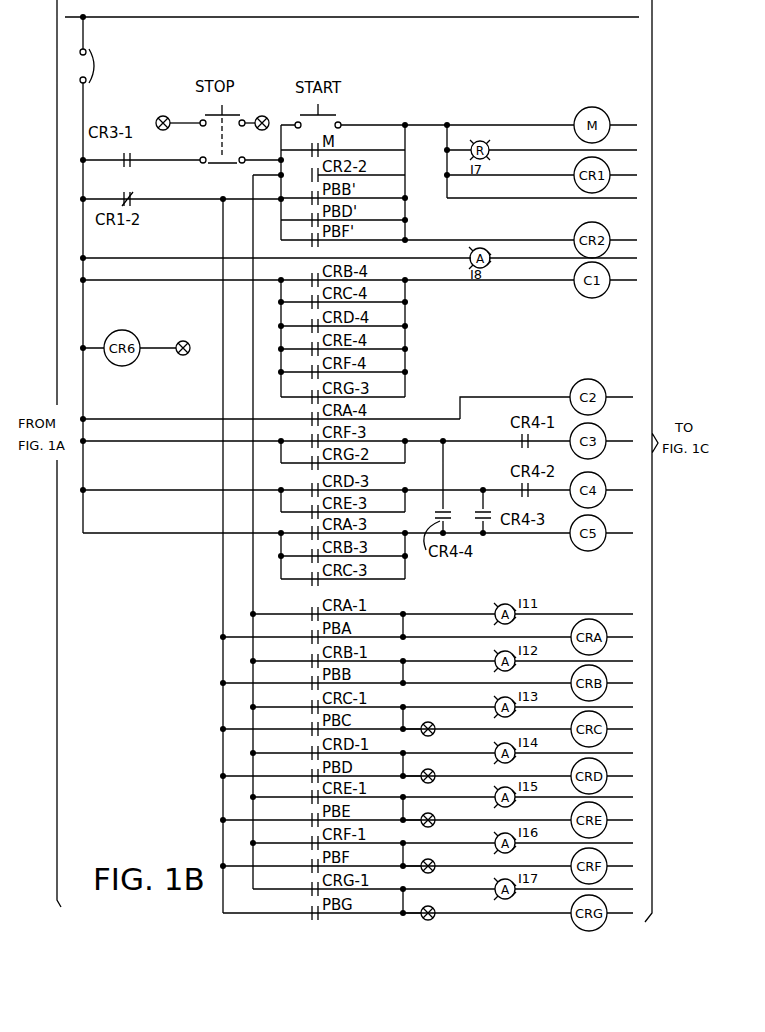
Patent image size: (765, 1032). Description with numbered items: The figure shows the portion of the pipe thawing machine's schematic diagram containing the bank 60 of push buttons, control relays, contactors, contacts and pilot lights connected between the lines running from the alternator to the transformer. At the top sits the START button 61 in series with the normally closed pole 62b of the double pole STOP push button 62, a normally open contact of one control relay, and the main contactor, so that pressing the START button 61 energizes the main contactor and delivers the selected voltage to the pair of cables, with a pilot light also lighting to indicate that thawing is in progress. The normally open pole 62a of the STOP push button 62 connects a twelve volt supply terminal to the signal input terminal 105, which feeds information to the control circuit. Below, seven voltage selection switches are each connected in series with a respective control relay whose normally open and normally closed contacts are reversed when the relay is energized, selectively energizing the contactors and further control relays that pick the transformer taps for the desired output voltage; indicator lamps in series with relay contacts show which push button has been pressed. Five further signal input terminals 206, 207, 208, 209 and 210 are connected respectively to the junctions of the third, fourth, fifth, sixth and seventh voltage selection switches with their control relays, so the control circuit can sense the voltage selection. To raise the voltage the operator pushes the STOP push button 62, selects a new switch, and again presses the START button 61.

The bank of push buttons, control relays, contactors, contacts and pilot lights 60 is at (250, 475).
The START button 61 is at (340, 113).
The STOP push button 62 is at (203, 110).
The normally open pole 62a is at (237, 112).
The normally closed pole 62b is at (222, 166).
The signal input terminal 105 is at (268, 112).
The signal input terminal 206 is at (427, 722).
The signal input terminal 207 is at (427, 769).
The signal input terminal 208 is at (427, 813).
The signal input terminal 209 is at (427, 859).
The signal input terminal 210 is at (427, 906).